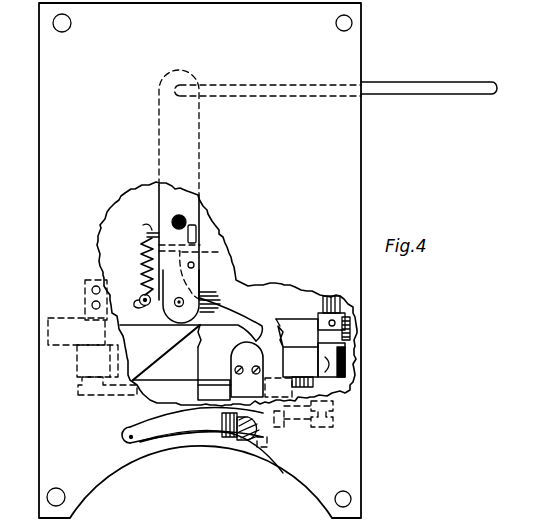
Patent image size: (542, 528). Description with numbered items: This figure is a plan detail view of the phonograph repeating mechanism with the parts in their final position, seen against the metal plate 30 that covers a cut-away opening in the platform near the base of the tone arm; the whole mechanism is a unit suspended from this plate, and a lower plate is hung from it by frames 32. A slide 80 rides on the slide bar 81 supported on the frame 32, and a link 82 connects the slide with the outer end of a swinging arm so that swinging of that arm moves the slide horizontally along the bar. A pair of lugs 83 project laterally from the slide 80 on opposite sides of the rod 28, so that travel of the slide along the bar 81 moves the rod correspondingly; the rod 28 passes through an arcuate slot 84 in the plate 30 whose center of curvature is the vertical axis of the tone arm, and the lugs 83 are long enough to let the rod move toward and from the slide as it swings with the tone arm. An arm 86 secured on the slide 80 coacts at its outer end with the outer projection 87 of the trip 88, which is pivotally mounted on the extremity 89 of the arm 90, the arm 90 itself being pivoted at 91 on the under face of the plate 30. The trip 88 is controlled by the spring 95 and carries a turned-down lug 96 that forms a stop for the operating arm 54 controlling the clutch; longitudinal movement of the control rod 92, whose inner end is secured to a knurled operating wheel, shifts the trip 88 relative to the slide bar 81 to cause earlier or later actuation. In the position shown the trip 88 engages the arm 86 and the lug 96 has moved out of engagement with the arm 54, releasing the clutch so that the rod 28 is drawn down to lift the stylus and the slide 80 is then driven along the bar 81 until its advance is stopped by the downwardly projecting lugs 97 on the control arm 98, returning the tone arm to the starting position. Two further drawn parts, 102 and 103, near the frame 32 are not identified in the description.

The rod 28 is at (279, 467).
The metal plate 30 is at (352, 170).
The frames 32 is at (87, 358).
The operating arm 54 is at (197, 228).
The slide 80 is at (196, 374).
The slide bar 81 is at (143, 390).
The link 82 is at (334, 417).
The lugs 83 is at (252, 455).
The arcuate slot 84 is at (142, 443).
The arm 86 is at (231, 366).
The outer projection 87 is at (238, 333).
The trip 88 is at (212, 290).
The extremity 89 is at (170, 313).
The arm 90 is at (159, 205).
The pivot 91 is at (186, 219).
The control rod 92 is at (405, 80).
The spring 95 is at (129, 266).
The turned down lug 96 is at (216, 243).
The downwardly projecting lugs 97 is at (110, 365).
The control arm 98 is at (133, 333).
The bracket 102 is at (353, 305).
The plate 103 is at (350, 333).